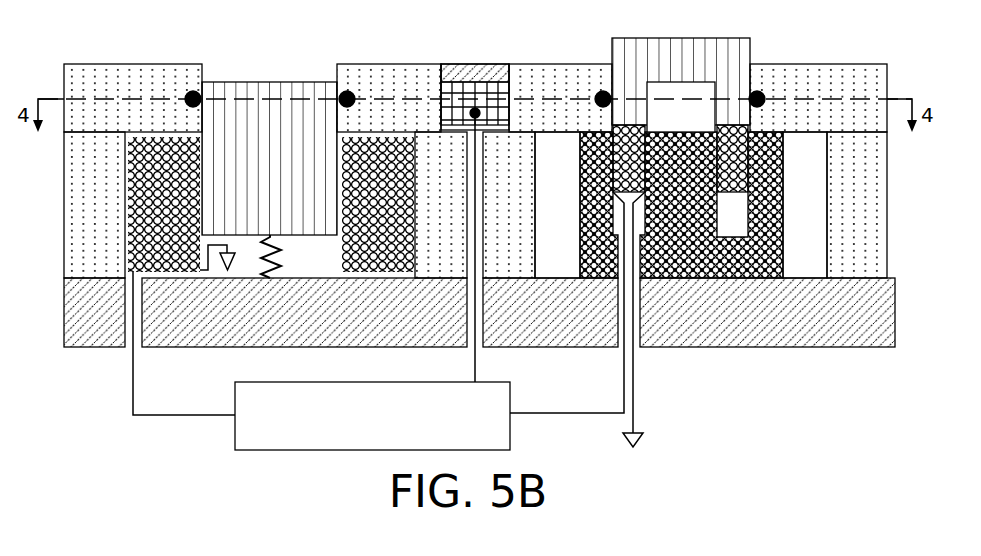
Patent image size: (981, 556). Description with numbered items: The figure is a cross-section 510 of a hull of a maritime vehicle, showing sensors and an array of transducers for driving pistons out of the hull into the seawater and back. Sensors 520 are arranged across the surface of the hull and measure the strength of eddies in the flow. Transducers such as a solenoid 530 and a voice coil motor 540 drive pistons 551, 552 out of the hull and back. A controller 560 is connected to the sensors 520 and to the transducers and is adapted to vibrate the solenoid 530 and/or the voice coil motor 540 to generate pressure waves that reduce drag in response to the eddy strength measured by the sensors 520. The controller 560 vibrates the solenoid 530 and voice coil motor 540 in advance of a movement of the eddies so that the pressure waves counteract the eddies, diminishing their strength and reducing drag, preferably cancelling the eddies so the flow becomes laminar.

The cross-section 510 is at (45, 81).
The sensors 520 is at (492, 64).
The solenoid 530 is at (307, 246).
The voice coil motor 540 is at (563, 238).
The piston 551 is at (301, 82).
The piston 552 is at (712, 38).
The controller 560 is at (283, 382).